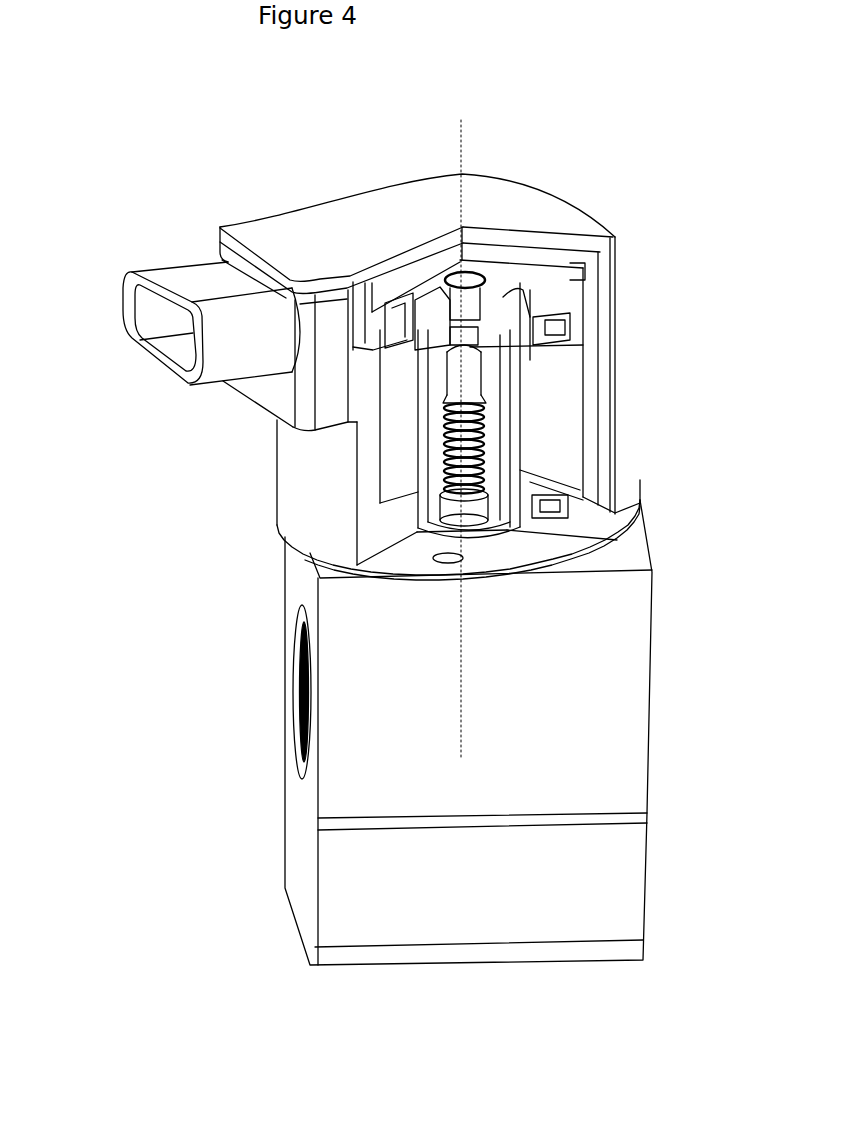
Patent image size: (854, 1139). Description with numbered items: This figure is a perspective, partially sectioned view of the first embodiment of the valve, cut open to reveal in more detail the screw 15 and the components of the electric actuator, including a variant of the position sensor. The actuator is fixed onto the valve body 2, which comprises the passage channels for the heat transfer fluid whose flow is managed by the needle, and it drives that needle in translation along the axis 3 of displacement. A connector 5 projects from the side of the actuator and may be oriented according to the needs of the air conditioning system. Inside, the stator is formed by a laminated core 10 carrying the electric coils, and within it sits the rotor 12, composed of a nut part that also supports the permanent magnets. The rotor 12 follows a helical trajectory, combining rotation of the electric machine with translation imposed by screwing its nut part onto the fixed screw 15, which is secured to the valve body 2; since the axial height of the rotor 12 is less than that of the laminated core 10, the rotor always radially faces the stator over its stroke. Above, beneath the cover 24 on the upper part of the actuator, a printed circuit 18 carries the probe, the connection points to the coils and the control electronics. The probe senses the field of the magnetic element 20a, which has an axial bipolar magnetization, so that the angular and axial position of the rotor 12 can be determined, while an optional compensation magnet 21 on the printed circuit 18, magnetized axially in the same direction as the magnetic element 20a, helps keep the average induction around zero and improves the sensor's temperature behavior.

The valve body 2 is at (460, 757).
The axis of displacement 3 is at (466, 131).
The connector 5 is at (173, 283).
The laminated core 10 is at (412, 307).
The rotor 12 is at (490, 462).
The screw 15 is at (460, 360).
The printed circuit 18 is at (508, 275).
The magnetic element 20a is at (540, 305).
The compensation magnet 21 is at (497, 290).
The cover 24 is at (513, 192).